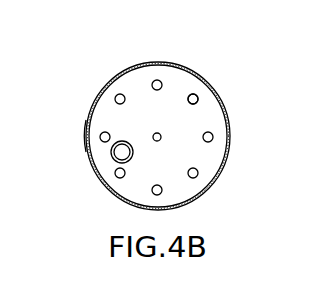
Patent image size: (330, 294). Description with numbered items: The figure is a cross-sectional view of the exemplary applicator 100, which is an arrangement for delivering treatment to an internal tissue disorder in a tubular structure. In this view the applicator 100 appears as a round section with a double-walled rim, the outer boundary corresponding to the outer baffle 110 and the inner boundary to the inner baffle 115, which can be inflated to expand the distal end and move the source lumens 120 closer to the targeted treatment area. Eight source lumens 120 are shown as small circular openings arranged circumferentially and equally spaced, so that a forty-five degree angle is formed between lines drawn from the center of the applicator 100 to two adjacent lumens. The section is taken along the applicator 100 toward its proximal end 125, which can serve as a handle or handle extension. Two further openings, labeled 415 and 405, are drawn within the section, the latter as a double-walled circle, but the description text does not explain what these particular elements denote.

The applicator 100 is at (233, 152).
The proximal end 125 is at (125, 68).
The source lumens 120 is at (86, 142).
The outer baffle 110 is at (198, 99).
The inner baffle 115 is at (154, 134).
The hole 415 is at (168, 112).
The port 405 is at (115, 162).